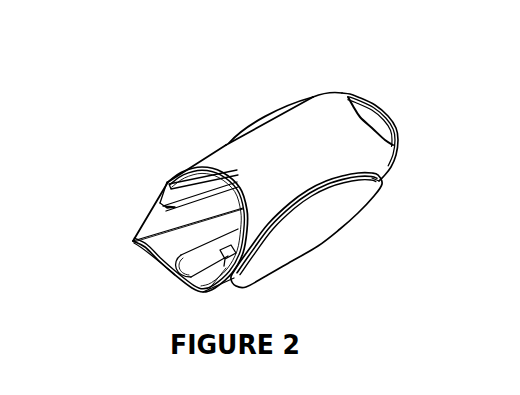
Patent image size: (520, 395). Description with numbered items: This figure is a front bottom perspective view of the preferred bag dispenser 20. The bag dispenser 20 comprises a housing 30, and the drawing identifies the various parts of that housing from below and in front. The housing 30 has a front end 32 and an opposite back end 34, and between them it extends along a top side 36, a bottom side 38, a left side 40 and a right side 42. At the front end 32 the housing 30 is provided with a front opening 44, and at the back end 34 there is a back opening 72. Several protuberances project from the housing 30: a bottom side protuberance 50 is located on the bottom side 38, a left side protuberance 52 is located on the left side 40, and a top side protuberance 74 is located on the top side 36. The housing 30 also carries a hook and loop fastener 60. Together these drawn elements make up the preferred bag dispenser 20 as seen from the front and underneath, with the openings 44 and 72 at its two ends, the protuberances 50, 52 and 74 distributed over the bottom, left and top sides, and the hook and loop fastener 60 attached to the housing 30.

The bag dispenser 20 is at (278, 99).
The housing 30 is at (333, 93).
The front end 32 is at (160, 268).
The back end 34 is at (405, 129).
The top side 36 is at (250, 127).
The bottom side 38 is at (380, 182).
The left side 40 is at (153, 257).
The right side 42 is at (347, 155).
The front opening 44 is at (168, 233).
The bottom side protuberance 50 is at (242, 260).
The left side protuberance 52 is at (177, 280).
The hook and loop fastener 60 is at (350, 222).
The back opening 72 is at (376, 121).
The top side protuberance 74 is at (164, 206).